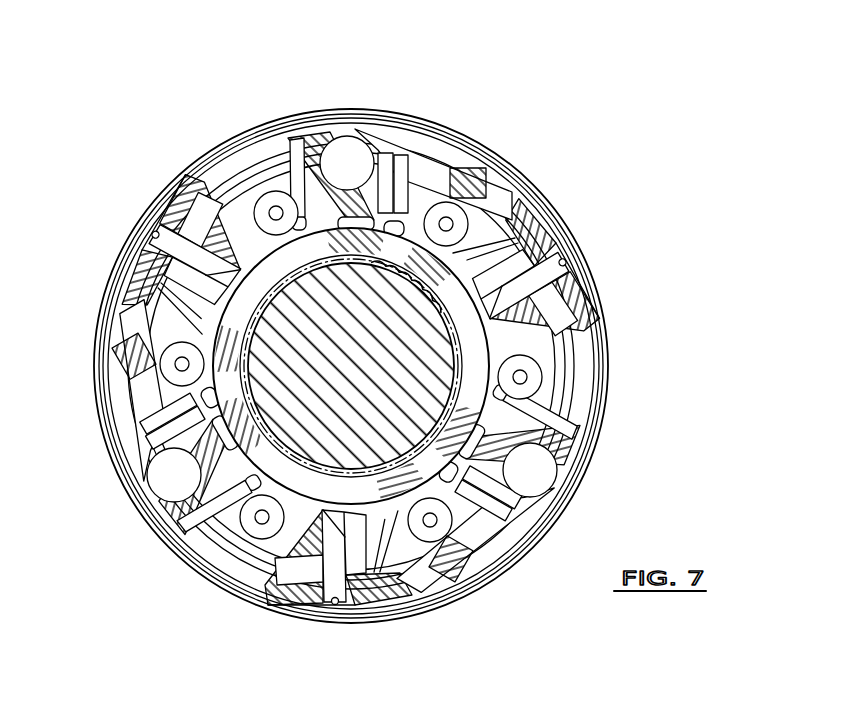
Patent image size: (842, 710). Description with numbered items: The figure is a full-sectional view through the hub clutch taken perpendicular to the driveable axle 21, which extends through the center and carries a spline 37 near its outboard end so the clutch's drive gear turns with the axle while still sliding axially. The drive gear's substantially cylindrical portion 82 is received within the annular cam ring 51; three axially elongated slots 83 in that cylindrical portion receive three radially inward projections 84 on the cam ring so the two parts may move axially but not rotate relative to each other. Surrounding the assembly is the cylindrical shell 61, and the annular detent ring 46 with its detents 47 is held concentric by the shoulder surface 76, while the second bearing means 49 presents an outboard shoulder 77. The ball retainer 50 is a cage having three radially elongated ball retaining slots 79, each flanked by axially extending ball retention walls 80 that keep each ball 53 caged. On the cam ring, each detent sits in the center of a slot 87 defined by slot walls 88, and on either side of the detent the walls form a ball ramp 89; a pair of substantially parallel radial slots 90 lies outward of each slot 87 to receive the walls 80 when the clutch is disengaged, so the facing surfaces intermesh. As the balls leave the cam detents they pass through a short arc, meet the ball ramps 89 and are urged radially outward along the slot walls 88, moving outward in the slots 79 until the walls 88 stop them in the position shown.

The driveable axle 21 is at (369, 363).
The spline 37 is at (386, 268).
The annular detent ring 46 is at (592, 343).
The detent 47 is at (258, 203).
The second bearing means 49 is at (600, 375).
The ball retainer 50 is at (597, 388).
The annular cam ring 51 is at (386, 135).
The ball 53 is at (346, 150).
The shell 61 is at (575, 500).
The shoulder surface 76 is at (522, 248).
The shoulder 77 is at (562, 295).
The ball retaining slot 79 is at (165, 456).
The ball retention wall 80 is at (592, 396).
The cylindrical portion of drive gear 82 is at (577, 425).
The slot 83 is at (302, 268).
The projection 84 is at (290, 470).
The slot 87 is at (555, 265).
The slot defining wall 88 is at (565, 283).
The ball ramp 89 is at (385, 580).
The slot 90 is at (440, 148).